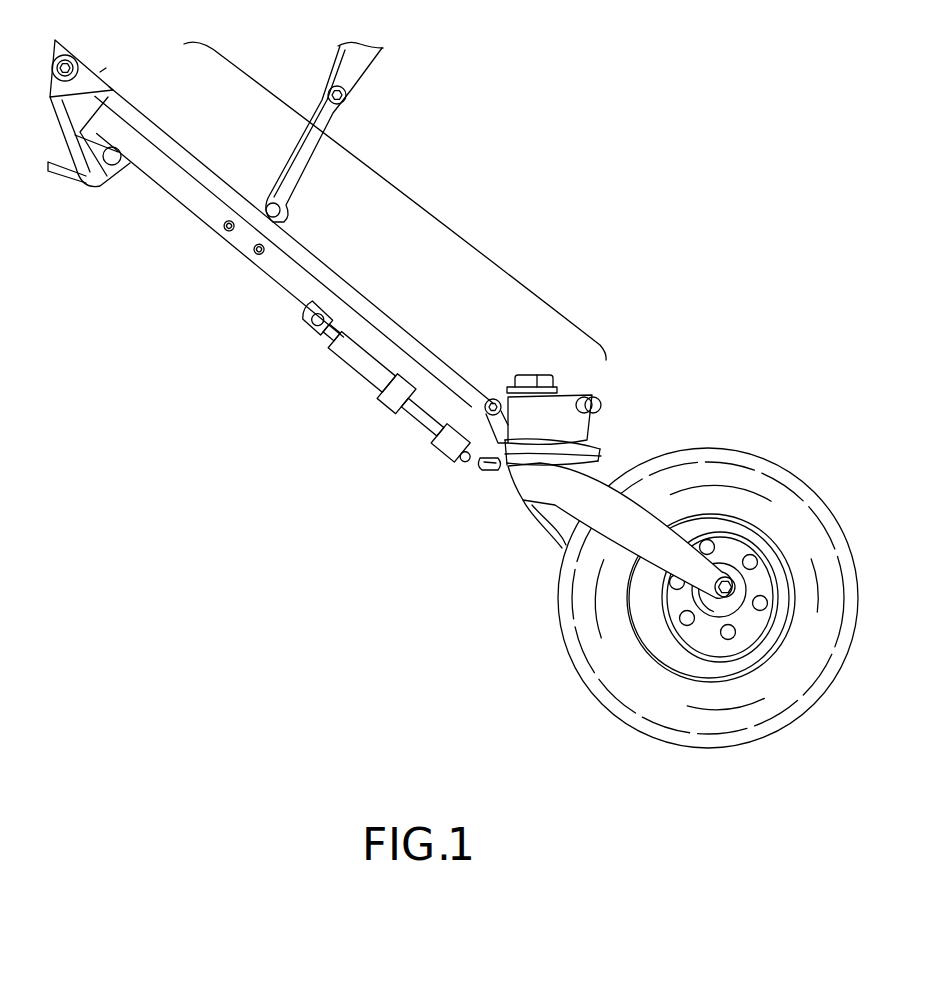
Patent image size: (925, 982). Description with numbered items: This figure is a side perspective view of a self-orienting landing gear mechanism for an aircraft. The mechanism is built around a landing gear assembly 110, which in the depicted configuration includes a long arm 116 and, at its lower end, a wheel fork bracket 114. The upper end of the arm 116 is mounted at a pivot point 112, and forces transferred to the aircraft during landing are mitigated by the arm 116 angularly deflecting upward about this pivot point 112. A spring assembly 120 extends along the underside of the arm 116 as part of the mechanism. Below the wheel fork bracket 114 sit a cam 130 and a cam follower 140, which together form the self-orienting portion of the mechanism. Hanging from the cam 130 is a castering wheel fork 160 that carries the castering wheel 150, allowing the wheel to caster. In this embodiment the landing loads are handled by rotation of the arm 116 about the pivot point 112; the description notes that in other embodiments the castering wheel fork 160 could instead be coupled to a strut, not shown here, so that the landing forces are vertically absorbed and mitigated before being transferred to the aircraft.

The landing gear assembly 110 is at (405, 197).
The pivot point 112 is at (115, 98).
The wheel fork bracket 114 is at (518, 418).
The arm 116 is at (315, 263).
The spring assembly 120 is at (368, 372).
The cam 130 is at (603, 457).
The cam follower 140 is at (490, 468).
The castering wheel 150 is at (653, 712).
The castering wheel fork 160 is at (620, 522).